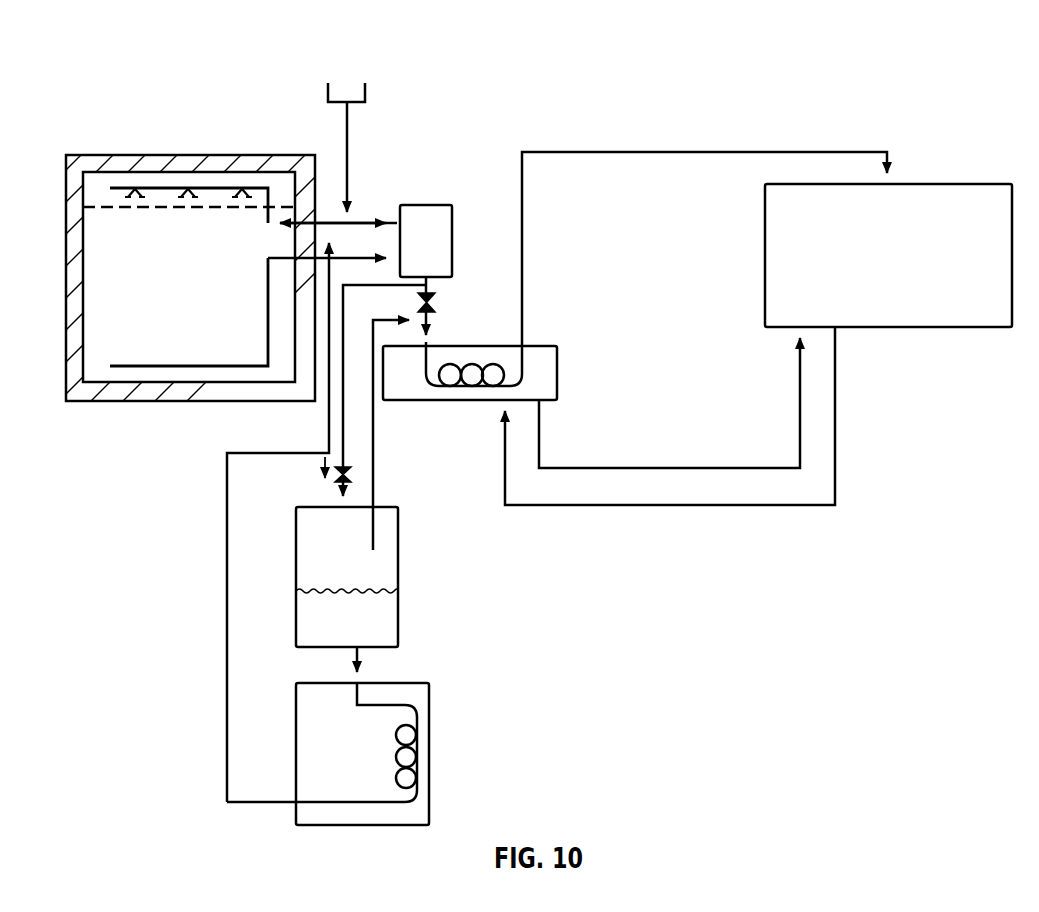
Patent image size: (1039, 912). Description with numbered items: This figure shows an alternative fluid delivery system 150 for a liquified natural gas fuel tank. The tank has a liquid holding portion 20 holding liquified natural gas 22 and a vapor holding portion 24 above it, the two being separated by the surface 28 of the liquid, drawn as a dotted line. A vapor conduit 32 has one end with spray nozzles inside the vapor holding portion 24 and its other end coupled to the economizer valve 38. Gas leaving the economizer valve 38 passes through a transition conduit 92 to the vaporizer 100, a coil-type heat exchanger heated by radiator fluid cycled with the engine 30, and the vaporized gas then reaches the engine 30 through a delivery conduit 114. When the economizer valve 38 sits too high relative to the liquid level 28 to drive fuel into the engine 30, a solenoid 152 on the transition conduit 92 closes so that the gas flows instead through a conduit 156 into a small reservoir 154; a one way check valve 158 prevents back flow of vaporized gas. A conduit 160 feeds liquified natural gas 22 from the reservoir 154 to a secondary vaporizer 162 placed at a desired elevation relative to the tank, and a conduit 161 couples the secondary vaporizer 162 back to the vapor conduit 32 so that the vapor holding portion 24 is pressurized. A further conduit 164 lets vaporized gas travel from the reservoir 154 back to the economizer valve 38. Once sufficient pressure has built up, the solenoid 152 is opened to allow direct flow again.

The liquid holding portion 20 is at (47, 343).
The vapor holding portion 24 is at (92, 180).
The surface of liquified natural gas 28 is at (135, 210).
The vapor conduit 32 is at (358, 221).
The economizer valve 38 is at (437, 253).
The solenoid 152 is at (436, 306).
The transition conduit 92 is at (432, 325).
The vaporizer 100 is at (557, 372).
The delivery conduit 114 is at (688, 152).
The fluid delivery system 150 is at (587, 86).
The engine 30 is at (898, 276).
The conduit 156 is at (343, 435).
The one way check valve 158 is at (352, 471).
The conduit 164 is at (374, 500).
The small reservoir 154 is at (398, 567).
The liquified natural gas 22 is at (390, 623).
The conduit 160 is at (352, 672).
The conduit 161 is at (224, 640).
The secondary vaporizer 162 is at (429, 775).